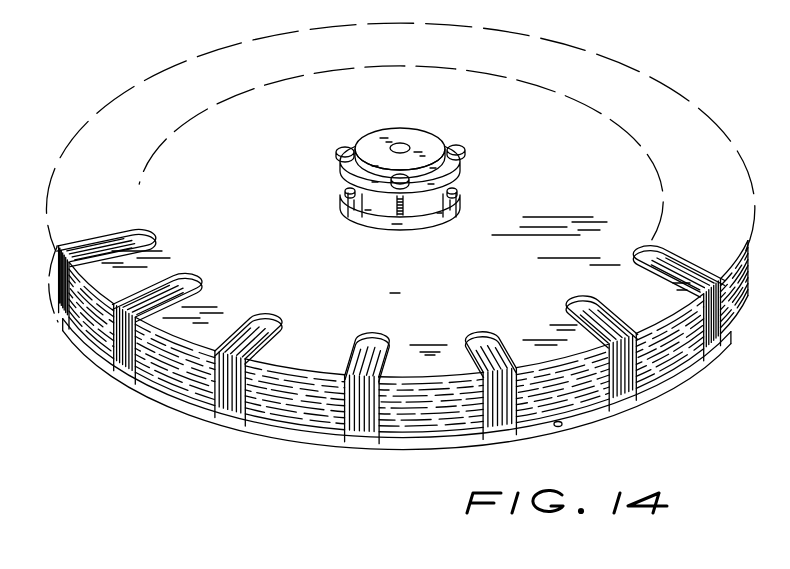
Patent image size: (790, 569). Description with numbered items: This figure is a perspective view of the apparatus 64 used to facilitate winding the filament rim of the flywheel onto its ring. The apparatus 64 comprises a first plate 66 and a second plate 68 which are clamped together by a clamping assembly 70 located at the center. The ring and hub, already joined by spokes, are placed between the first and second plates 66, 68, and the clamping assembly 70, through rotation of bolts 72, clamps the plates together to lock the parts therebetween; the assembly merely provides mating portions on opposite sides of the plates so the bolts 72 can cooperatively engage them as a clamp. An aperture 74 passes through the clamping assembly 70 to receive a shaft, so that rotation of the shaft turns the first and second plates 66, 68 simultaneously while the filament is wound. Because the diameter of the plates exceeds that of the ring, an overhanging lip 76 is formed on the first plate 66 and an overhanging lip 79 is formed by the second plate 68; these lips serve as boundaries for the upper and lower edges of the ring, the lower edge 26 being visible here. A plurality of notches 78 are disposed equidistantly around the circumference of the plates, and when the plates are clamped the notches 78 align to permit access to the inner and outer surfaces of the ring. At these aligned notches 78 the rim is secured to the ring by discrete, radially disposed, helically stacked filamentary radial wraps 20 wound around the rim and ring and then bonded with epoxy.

The radial wraps 20 is at (115, 368).
The lower edge of the ring 26 is at (690, 359).
The apparatus 64 is at (662, 60).
The first plate 66 is at (263, 250).
The second plate 68 is at (267, 440).
The clamping assembly 70 is at (367, 165).
The bolts 72 is at (345, 148).
The aperture 74 is at (405, 146).
The overhanging lip 76 is at (684, 311).
The notches 78 is at (75, 233).
The overhanging lip 79 is at (559, 426).